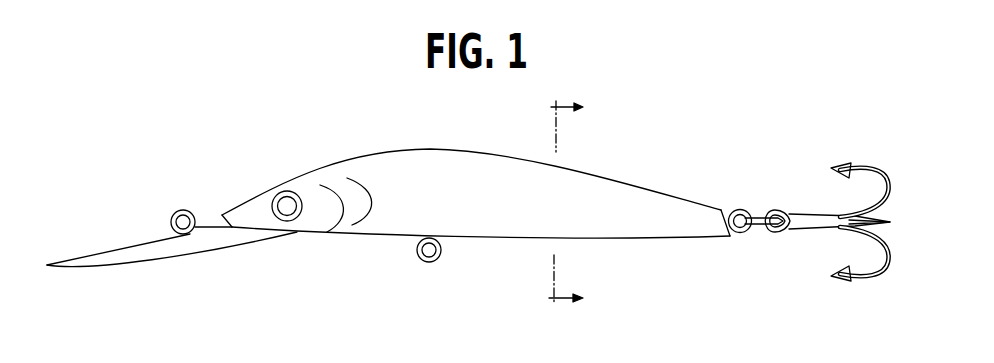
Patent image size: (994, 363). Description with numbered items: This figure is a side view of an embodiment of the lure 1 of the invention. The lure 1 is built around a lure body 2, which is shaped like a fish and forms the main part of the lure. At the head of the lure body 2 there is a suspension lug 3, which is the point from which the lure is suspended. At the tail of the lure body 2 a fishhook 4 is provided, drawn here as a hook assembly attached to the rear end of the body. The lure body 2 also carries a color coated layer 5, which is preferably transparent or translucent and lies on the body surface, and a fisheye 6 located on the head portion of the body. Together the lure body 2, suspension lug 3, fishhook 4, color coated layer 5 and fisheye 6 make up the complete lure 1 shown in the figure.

The lure 1 is at (682, 123).
The lure body 2 is at (647, 240).
The suspension lug 3 is at (429, 262).
The fishhook 4 is at (808, 232).
The color coated layer 5 is at (448, 142).
The fisheye 6 is at (279, 193).